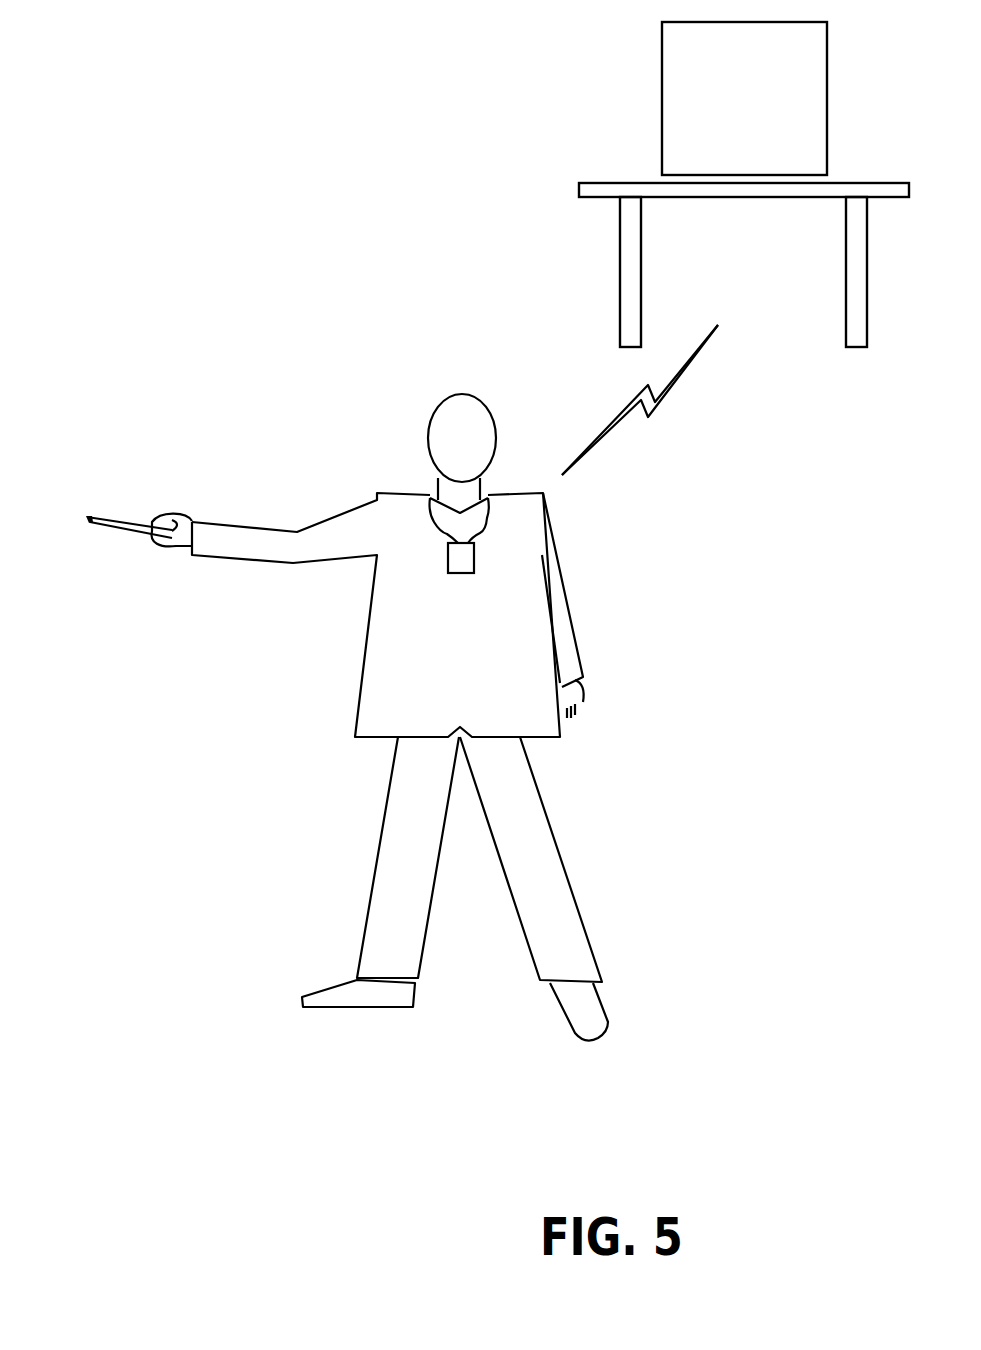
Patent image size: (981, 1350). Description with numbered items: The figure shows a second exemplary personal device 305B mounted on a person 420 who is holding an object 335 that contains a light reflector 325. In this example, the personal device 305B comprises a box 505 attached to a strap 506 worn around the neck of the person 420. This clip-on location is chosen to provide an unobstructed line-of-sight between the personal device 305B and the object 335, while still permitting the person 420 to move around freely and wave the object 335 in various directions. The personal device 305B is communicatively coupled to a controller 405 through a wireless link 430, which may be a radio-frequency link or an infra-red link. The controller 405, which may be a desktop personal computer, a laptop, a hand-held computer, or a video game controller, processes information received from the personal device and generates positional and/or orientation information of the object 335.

The controller 405 is at (817, 57).
The wireless link 430 is at (578, 415).
The person 420 is at (282, 688).
The second exemplary personal device 305B is at (449, 569).
The box 505 is at (475, 560).
The strap 506 is at (425, 512).
The object 335 is at (113, 520).
The light reflector 325 is at (87, 518).